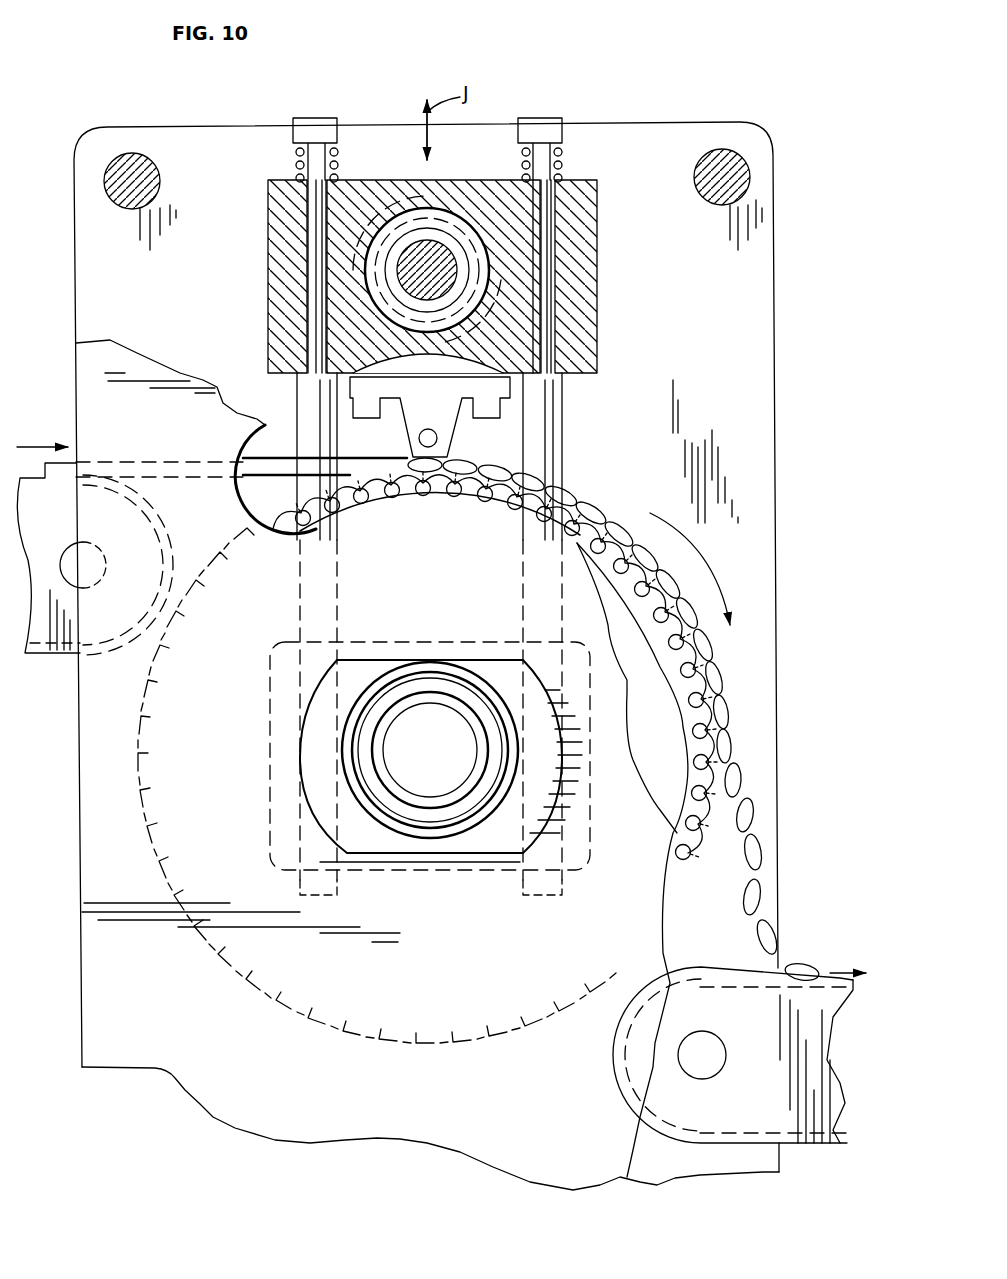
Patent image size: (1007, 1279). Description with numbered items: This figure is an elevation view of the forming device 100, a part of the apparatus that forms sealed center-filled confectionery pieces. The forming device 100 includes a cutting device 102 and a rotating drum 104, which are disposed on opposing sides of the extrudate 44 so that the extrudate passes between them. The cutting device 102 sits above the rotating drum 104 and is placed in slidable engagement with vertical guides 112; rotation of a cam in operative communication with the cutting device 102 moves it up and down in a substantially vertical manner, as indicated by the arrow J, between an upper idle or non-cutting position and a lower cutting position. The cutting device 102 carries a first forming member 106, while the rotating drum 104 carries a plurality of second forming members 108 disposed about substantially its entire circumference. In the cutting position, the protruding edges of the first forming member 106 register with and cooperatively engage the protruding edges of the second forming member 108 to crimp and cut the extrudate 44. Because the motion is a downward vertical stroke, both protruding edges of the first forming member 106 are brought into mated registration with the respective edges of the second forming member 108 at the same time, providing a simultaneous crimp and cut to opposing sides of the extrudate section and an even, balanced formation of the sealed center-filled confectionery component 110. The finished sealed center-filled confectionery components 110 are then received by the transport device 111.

The forming device 100 is at (680, 105).
The cutting device 102 is at (447, 425).
The rotating drum 104 is at (672, 733).
The first forming member 106 is at (450, 447).
The second forming member 108 is at (390, 498).
The sealed center-filled confectionery component 110 is at (573, 468).
The transport device 111 is at (833, 1145).
The vertical guides 112 is at (268, 180).
The extrudate 44 is at (67, 467).